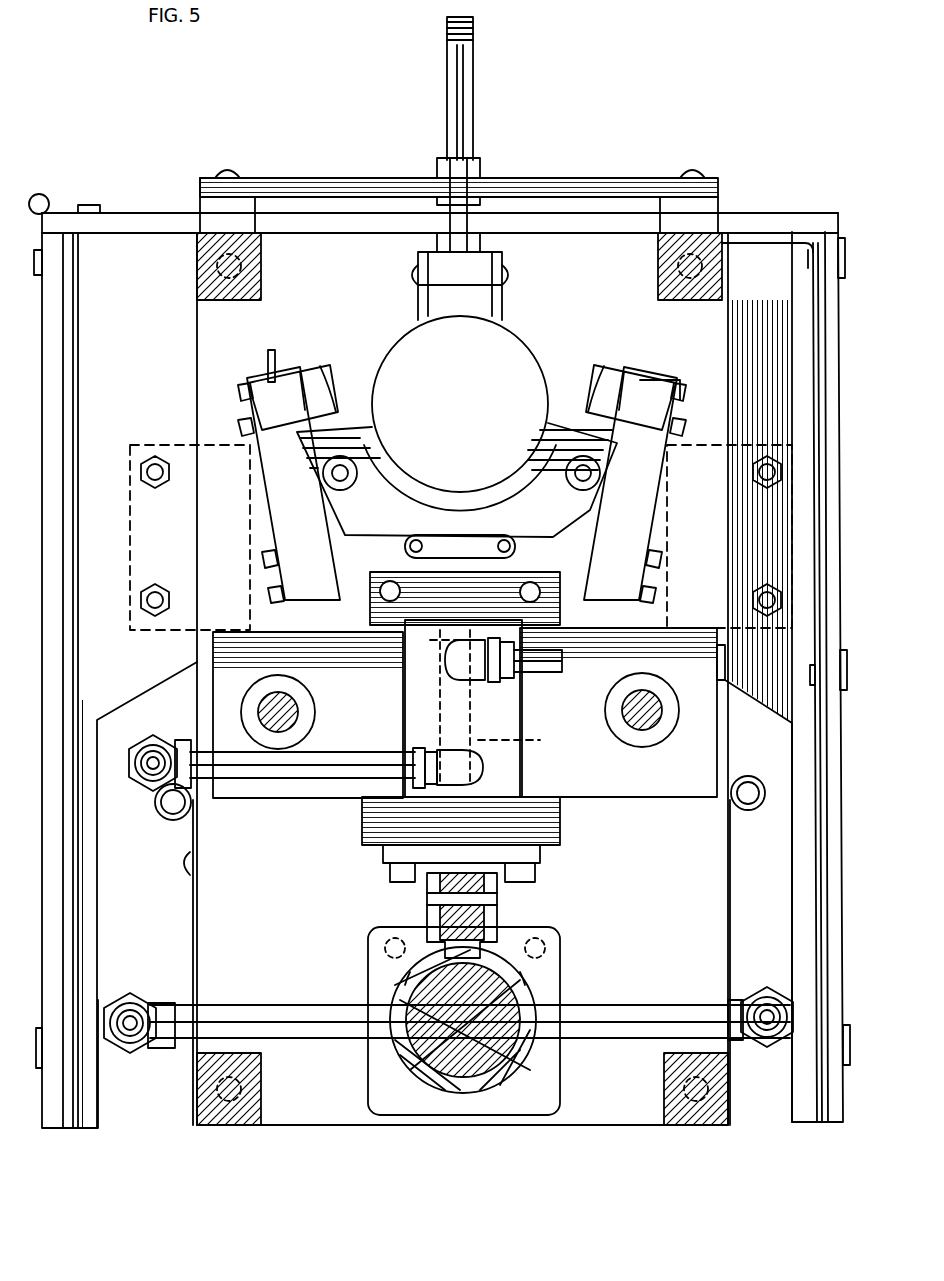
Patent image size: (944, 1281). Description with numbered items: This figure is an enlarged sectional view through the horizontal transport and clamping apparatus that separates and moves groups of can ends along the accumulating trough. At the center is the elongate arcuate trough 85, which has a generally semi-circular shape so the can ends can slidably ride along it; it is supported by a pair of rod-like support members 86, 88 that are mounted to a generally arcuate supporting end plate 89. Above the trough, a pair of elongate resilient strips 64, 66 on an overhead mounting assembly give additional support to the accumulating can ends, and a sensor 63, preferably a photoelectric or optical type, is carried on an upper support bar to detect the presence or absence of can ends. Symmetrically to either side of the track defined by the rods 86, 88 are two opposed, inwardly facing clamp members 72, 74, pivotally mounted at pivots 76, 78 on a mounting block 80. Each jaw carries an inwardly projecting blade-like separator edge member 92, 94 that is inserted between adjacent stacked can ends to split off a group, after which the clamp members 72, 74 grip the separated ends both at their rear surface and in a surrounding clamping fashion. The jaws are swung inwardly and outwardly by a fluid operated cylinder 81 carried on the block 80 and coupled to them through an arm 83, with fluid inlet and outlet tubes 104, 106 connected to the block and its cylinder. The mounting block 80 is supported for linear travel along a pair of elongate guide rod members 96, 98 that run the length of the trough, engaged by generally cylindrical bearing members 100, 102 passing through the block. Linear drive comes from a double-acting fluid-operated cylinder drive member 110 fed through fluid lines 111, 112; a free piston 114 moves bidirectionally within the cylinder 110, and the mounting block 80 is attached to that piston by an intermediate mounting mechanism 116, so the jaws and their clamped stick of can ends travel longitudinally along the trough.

The sensor 63 is at (477, 160).
The elongate resilient strip 64 is at (500, 305).
The elongate resilient strip 66 is at (426, 310).
The clamp member 72 is at (278, 372).
The clamp member 74 is at (622, 368).
The pivot 76 is at (386, 618).
The pivot 78 is at (540, 596).
The mounting block 80 is at (463, 708).
The fluid operated cylinder 81 is at (521, 743).
The arm 83 is at (470, 544).
The elongate arcuate trough 85 is at (412, 482).
The rod-like support member 86 is at (572, 488).
The rod-like support member 88 is at (352, 488).
The supporting end plate 89 is at (465, 506).
The blade-like separator edge member 92 is at (325, 378).
The blade-like separator edge member 94 is at (582, 376).
The elongate guide rod member 96 is at (268, 705).
The elongate guide rod member 98 is at (630, 712).
The cylindrical bearing member 100 is at (305, 700).
The cylindrical bearing member 102 is at (645, 740).
The fluid inlet and outlet tube 104 is at (540, 663).
The fluid inlet and outlet tube 106 is at (272, 768).
The fluid-operated cylinder drive member 110 is at (540, 978).
The fluid line 111 is at (630, 1020).
The fluid line 112 is at (265, 1003).
The free piston 114 is at (462, 1070).
The intermediate mounting mechanism 116 is at (505, 893).